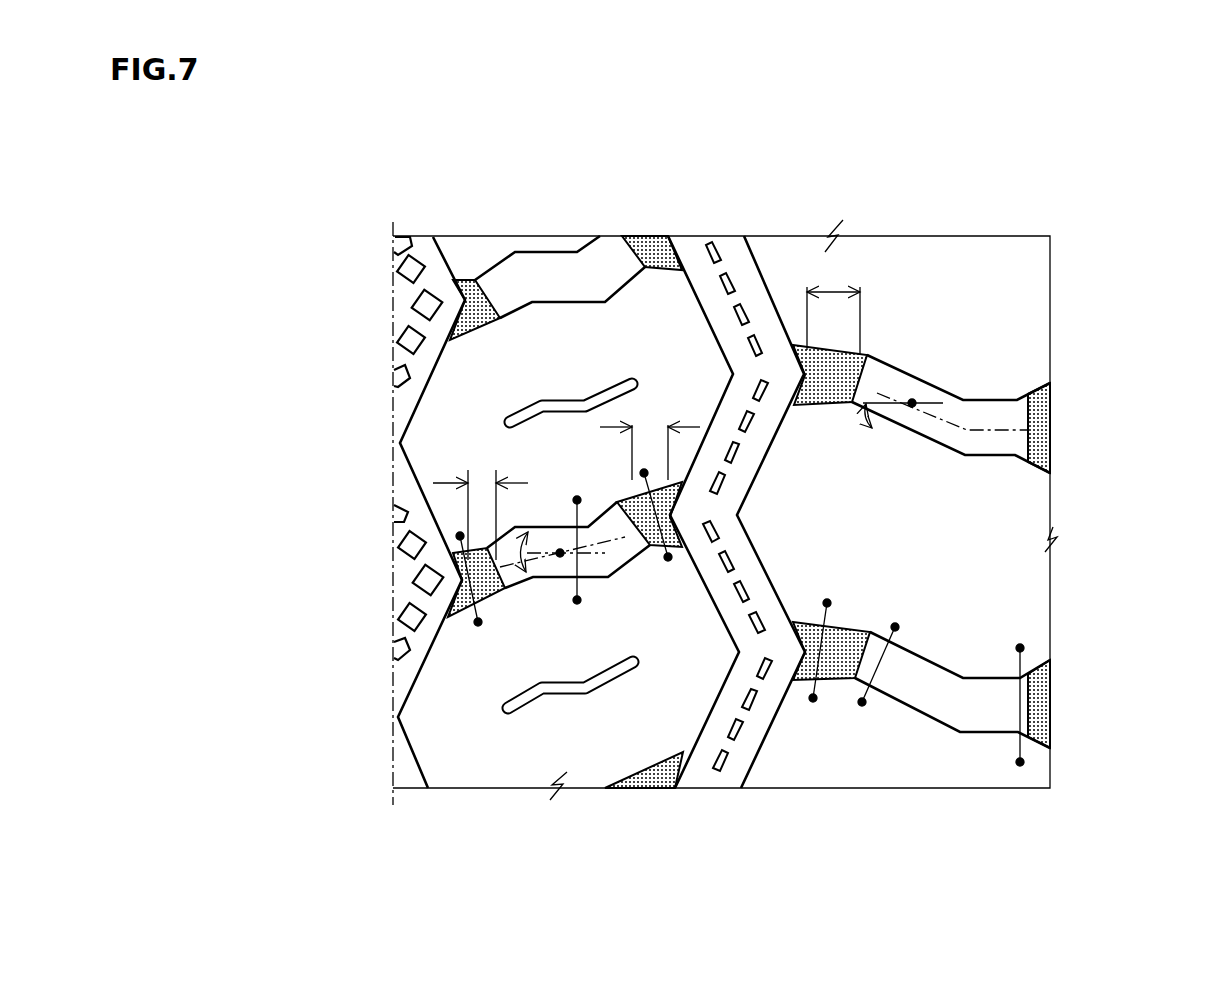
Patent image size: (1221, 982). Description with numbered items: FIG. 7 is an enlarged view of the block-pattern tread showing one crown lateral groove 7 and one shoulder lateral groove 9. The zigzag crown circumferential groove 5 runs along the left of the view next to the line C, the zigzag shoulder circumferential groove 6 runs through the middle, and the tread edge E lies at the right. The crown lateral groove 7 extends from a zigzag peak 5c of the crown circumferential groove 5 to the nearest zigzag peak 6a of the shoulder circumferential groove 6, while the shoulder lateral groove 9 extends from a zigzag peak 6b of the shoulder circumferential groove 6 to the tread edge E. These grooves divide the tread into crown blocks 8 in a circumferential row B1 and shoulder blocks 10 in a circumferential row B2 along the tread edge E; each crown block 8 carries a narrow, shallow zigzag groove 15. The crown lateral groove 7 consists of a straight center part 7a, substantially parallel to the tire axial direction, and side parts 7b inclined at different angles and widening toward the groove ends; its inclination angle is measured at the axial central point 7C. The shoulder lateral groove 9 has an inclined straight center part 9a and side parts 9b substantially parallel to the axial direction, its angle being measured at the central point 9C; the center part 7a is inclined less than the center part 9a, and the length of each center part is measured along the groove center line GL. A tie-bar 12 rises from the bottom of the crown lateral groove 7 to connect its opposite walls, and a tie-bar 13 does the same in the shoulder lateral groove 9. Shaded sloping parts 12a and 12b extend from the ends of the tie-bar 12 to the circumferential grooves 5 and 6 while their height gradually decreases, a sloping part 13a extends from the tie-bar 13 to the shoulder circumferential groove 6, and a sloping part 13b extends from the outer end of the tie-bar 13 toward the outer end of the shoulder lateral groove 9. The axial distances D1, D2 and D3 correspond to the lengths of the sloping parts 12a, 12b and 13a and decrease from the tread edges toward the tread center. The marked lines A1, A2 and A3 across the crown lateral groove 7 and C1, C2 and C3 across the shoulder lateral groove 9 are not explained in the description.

The crown circumferential groove 5 is at (400, 668).
The zigzag peak 5c is at (452, 307).
The shoulder circumferential groove 6 is at (738, 263).
The zigzag peak 6a is at (687, 517).
The zigzag peak 6b is at (787, 372).
The crown lateral groove 7 is at (513, 292).
The straight center part 7a is at (575, 270).
The side part 7b is at (620, 278).
The axial central point 7C is at (560, 553).
The crown block 8 is at (423, 450).
The shoulder lateral groove 9 is at (967, 455).
The straight center part 9a is at (917, 410).
The side part 9b is at (828, 390).
The axial central point 9C is at (912, 403).
The shoulder block 10 is at (943, 273).
The tie-bar 12 is at (545, 277).
The sloping part 12a is at (650, 252).
The sloping part 12b is at (468, 280).
The tie-bar 13 is at (910, 393).
The sloping part 13a is at (867, 355).
The sloping part 13b is at (1037, 410).
The zigzag groove 15 is at (520, 420).
The groove width measuring line A1 is at (460, 591).
The groove width measuring line A2 is at (577, 537).
The groove width measuring line A3 is at (651, 501).
The circumferential row B1 is at (578, 793).
The circumferential row B2 is at (845, 800).
The tire equator line C is at (395, 499).
The groove width measuring line C1 is at (825, 639).
The groove width measuring line C2 is at (885, 652).
The groove width measuring line C3 is at (1020, 692).
The axial distance D1 is at (480, 505).
The axial distance D2 is at (650, 438).
The axial distance D3 is at (833, 308).
The tread edge E is at (1050, 255).
The center line GL is at (1050, 425).